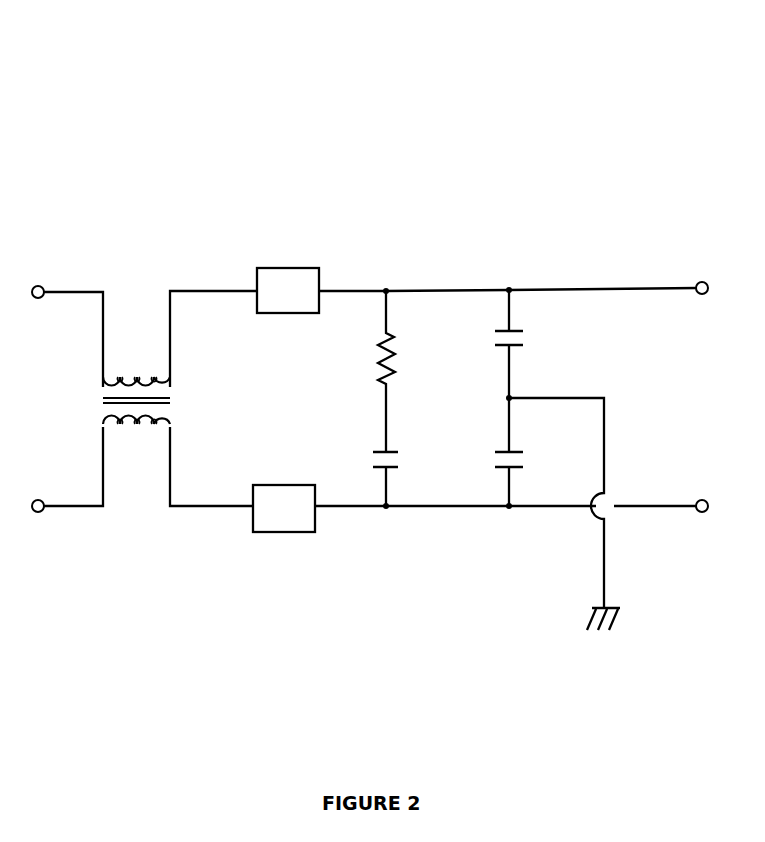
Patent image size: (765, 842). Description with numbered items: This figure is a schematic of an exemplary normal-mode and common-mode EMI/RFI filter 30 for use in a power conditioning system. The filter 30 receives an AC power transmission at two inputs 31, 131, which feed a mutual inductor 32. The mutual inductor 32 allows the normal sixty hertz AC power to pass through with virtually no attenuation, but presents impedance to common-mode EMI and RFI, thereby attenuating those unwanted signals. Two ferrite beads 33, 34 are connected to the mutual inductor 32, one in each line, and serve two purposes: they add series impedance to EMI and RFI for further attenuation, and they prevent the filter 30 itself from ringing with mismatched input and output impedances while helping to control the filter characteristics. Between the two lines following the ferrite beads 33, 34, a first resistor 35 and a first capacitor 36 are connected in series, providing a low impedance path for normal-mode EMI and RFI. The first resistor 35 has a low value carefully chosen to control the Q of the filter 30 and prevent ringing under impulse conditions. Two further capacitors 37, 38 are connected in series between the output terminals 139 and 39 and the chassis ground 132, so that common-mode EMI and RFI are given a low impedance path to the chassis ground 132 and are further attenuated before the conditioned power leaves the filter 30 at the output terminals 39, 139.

The normal-mode and common-mode EMI/RFI filter 30 is at (563, 100).
The input 31 is at (41, 286).
The input 131 is at (39, 512).
The mutual inductor 32 is at (141, 428).
The ferrite bead 33 is at (290, 532).
The ferrite bead 34 is at (292, 268).
The first resistor 35 is at (393, 351).
The first capacitor 36 is at (389, 450).
The capacitor 37 is at (512, 468).
The capacitor 38 is at (511, 328).
The output terminal 39 is at (708, 286).
The output terminal 139 is at (708, 508).
The chassis ground 132 is at (584, 616).